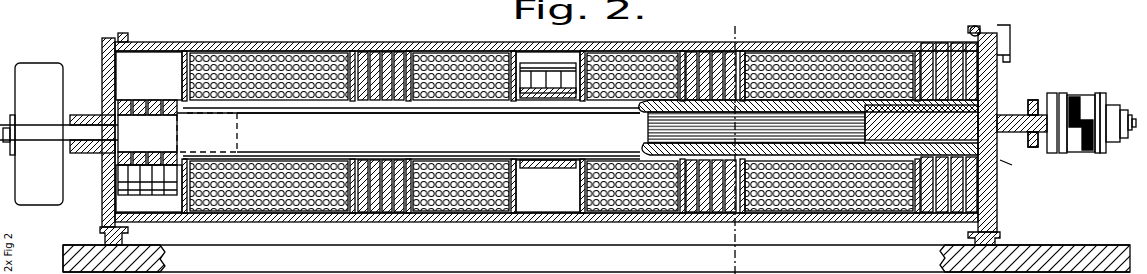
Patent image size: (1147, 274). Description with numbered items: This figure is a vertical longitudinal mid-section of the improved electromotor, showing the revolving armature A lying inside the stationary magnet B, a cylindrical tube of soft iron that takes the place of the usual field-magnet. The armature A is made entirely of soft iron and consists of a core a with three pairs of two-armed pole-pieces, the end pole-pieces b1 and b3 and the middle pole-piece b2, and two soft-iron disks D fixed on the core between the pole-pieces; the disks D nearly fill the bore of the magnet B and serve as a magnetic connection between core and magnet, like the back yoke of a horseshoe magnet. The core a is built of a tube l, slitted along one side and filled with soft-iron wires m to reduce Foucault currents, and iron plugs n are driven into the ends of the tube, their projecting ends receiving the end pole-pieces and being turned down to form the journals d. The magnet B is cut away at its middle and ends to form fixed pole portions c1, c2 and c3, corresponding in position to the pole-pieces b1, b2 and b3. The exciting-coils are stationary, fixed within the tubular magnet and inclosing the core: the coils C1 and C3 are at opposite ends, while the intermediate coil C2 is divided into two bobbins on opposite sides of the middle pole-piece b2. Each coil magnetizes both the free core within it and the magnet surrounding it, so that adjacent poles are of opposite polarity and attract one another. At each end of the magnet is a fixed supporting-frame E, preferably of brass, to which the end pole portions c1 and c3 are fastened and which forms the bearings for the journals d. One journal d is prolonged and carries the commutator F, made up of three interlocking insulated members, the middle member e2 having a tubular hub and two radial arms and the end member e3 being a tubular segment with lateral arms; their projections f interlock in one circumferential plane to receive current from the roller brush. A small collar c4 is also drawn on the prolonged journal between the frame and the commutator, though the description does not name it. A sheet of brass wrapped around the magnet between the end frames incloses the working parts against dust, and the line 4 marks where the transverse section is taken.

The supporting-frame E is at (547, 135).
The stationary magnet B is at (546, 124).
The end pole portion c1 is at (149, 145).
The end pole-piece b1 is at (147, 125).
The iron plug n is at (177, 154).
The exciting-coil C1 is at (269, 132).
The intermediate exciting-coil C2 is at (545, 132).
The exciting-coil C3 is at (829, 132).
The soft-iron disk D is at (547, 118).
The end pole portion c3 is at (949, 126).
The middle pole portion c2 is at (548, 119).
The middle pole-piece b2 is at (548, 171).
The armature core a is at (411, 133).
The tube l is at (438, 132).
The revolving armature A is at (546, 132).
The soft-iron wires m is at (808, 127).
The journal d is at (62, 130).
The collar c4 is at (1034, 129).
The end pole-piece b3 is at (1009, 165).
The commutator F is at (1076, 112).
The projection f is at (1079, 123).
The end commutator member e3 is at (1115, 113).
The middle commutator member e2 is at (1128, 131).
The section line 4 is at (733, 144).